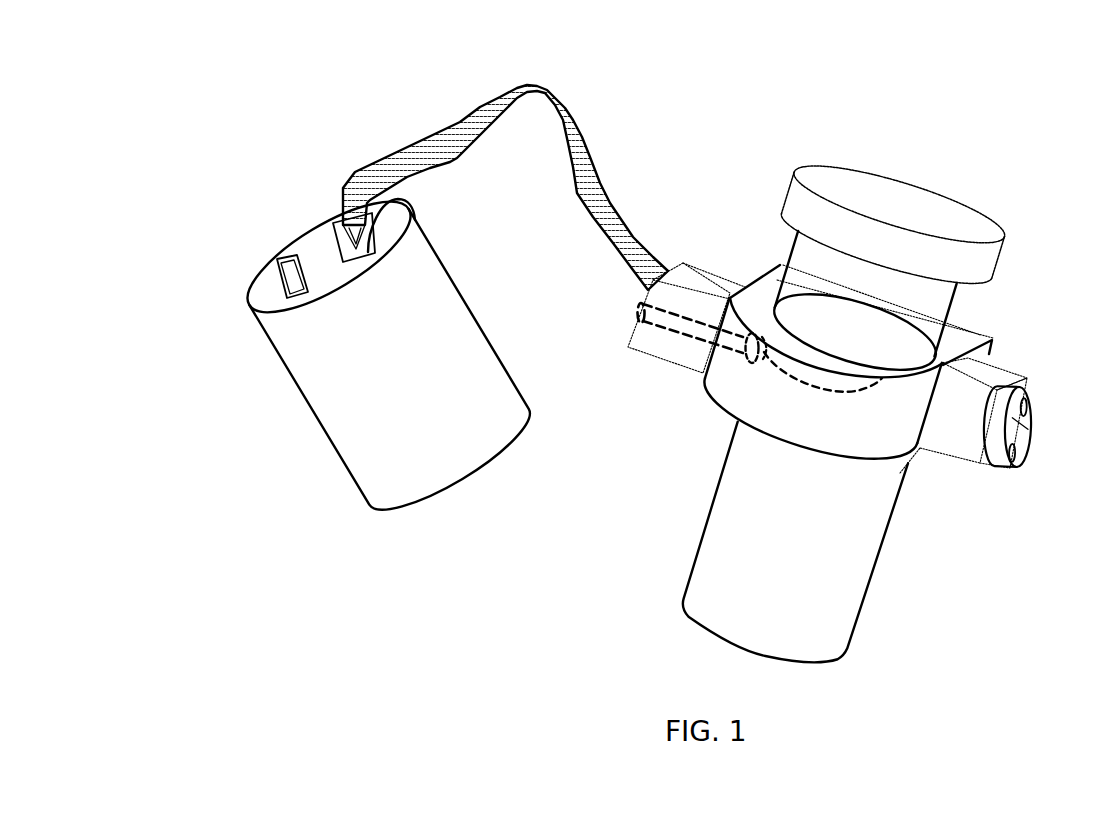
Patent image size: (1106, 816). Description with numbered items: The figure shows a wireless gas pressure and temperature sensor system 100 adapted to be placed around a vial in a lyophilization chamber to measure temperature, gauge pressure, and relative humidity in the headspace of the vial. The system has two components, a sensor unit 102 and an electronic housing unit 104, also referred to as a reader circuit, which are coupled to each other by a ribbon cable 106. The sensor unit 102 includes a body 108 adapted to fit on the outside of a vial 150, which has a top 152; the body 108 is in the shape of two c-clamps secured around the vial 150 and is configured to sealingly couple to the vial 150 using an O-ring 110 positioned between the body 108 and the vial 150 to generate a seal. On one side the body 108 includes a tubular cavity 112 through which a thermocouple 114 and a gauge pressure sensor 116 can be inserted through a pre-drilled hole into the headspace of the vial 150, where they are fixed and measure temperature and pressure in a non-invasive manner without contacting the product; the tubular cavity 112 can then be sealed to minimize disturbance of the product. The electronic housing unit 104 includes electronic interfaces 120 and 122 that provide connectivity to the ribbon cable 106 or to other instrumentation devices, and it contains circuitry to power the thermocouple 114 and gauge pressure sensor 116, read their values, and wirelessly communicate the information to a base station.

The wireless gas pressure and temperature sensor system 100 is at (290, 74).
The sensor unit 102 is at (776, 170).
The electronic housing unit 104 is at (282, 238).
The ribbon cable 106 is at (383, 160).
The body 108 is at (990, 353).
The O-ring 110 is at (787, 327).
The tubular cavity 112 is at (690, 341).
The thermocouple 114 is at (783, 360).
The gauge pressure sensor 116 is at (756, 362).
The electronic interface 120 is at (400, 213).
The electronic interface 122 is at (298, 257).
The vial 150 is at (866, 578).
The top 152 is at (897, 183).